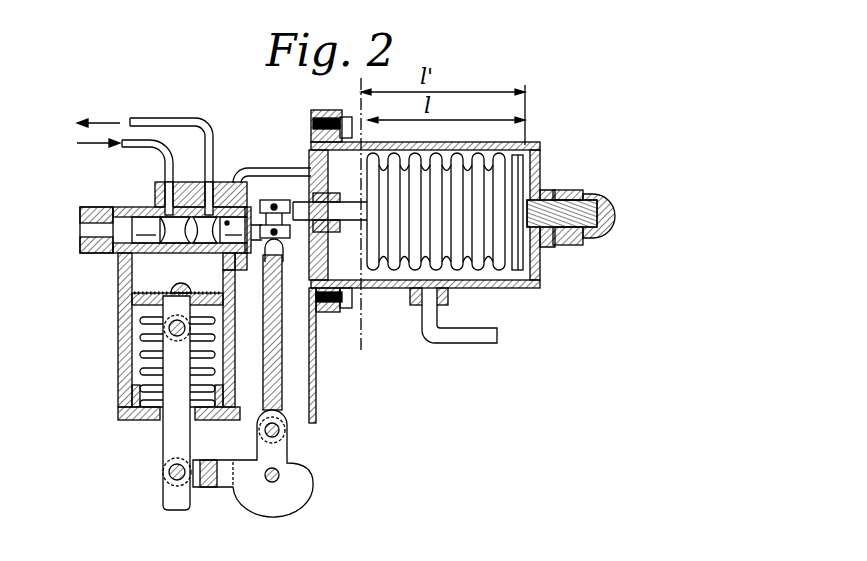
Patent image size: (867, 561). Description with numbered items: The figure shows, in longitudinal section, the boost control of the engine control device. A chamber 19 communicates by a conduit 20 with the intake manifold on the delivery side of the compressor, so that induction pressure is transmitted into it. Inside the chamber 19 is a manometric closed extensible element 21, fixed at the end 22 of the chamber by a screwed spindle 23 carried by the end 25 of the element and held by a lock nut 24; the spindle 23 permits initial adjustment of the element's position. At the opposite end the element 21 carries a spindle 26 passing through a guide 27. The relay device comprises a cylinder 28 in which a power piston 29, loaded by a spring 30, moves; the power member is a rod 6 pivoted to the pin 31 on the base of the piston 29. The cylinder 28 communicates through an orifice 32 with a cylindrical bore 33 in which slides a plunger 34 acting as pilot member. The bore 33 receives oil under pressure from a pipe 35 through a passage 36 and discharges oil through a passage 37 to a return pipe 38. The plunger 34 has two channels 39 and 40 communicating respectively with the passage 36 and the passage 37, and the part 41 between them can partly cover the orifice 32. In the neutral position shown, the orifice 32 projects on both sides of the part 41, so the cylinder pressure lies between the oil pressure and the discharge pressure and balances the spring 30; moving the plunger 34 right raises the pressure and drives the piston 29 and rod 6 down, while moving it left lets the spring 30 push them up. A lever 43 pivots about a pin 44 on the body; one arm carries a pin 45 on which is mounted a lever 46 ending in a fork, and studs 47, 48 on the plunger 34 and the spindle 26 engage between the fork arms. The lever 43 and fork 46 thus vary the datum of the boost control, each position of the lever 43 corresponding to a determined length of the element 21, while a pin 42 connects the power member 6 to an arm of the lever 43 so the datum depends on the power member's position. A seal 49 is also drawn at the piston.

The rod 6 is at (174, 446).
The chamber 19 is at (526, 284).
The conduit 20 is at (449, 336).
The closed extensible element 21 is at (500, 263).
The end of the chamber 22 is at (546, 193).
The screwed spindle 23 is at (583, 234).
The lock nut 24 is at (560, 232).
The end of the element 25 is at (523, 253).
The spindle 26 is at (338, 212).
The guide 27 is at (314, 198).
The cylinder 28 is at (235, 290).
The power piston 29 is at (125, 309).
The spring 30 is at (141, 357).
The pin 31 is at (187, 330).
The orifice 32 is at (188, 236).
The cylindrical bore 33 is at (207, 243).
The plunger 34 is at (228, 222).
The pipe 35 is at (123, 147).
The passage 36 is at (153, 205).
The passage 37 is at (210, 212).
The pipe 38 is at (133, 121).
The channel 39 is at (170, 240).
The channel 40 is at (242, 257).
The part of the plunger 41 is at (170, 212).
The pin 42 is at (169, 471).
The lever 43 is at (250, 482).
The pin 44 is at (278, 476).
The pin 45 is at (278, 433).
The lever ending in a fork 46 is at (283, 350).
The stud 47 is at (286, 250).
The stud 48 is at (272, 205).
The piston seal 49 is at (136, 293).